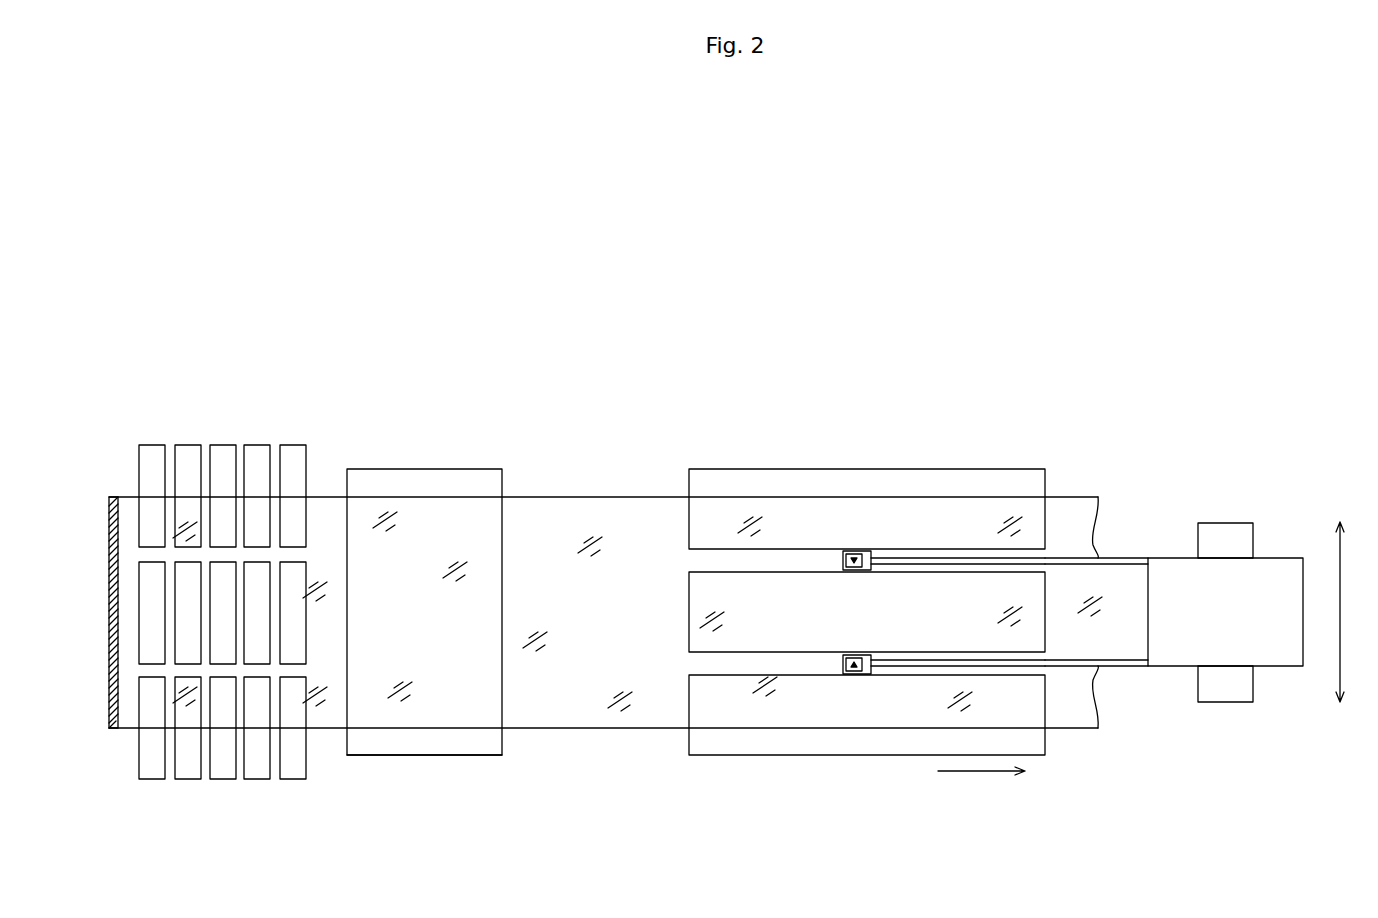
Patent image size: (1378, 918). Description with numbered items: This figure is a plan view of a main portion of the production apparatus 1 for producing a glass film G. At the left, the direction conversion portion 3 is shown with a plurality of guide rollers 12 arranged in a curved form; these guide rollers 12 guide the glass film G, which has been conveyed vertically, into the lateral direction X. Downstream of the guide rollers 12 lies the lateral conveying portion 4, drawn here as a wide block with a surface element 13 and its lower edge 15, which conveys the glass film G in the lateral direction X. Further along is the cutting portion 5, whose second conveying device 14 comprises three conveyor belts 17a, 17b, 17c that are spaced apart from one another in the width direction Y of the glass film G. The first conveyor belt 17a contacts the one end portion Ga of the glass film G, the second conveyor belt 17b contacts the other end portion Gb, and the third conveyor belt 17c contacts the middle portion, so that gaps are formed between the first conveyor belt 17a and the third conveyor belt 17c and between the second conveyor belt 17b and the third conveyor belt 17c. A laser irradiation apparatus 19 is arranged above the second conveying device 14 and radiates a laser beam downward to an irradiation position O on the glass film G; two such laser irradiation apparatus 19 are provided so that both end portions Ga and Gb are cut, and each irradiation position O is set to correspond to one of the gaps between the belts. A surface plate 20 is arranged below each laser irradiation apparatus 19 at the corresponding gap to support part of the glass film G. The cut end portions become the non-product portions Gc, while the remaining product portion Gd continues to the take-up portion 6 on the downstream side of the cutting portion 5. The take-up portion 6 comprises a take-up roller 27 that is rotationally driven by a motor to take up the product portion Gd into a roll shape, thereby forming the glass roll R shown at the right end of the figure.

The production apparatus 1 is at (965, 266).
The direction conversion portion 3 is at (218, 804).
The lateral conveying portion 4 is at (588, 813).
The cutting portion 5 is at (958, 432).
The take-up portion 6 is at (1289, 481).
The guide rollers 12 is at (152, 780).
The stage 13 is at (395, 784).
The second conveying device 14 is at (748, 776).
The stage surface 15 is at (440, 755).
The first conveyor belt 17a is at (688, 748).
The second conveyor belt 17b is at (737, 470).
The third conveyor belt 17c is at (688, 613).
The laser irradiation apparatus 19 is at (843, 555).
The surface plate 20 is at (866, 551).
The take-up roller 27 is at (1230, 690).
The glass film G is at (566, 512).
The one end portion Ga is at (523, 728).
The other end portion Gb is at (535, 497).
The non-product portions Gc is at (1072, 510).
The product portion Gd is at (1123, 572).
The irradiation position O is at (860, 571).
The glass roll R is at (1173, 650).
The lateral direction X is at (981, 785).
The width direction Y is at (1349, 612).